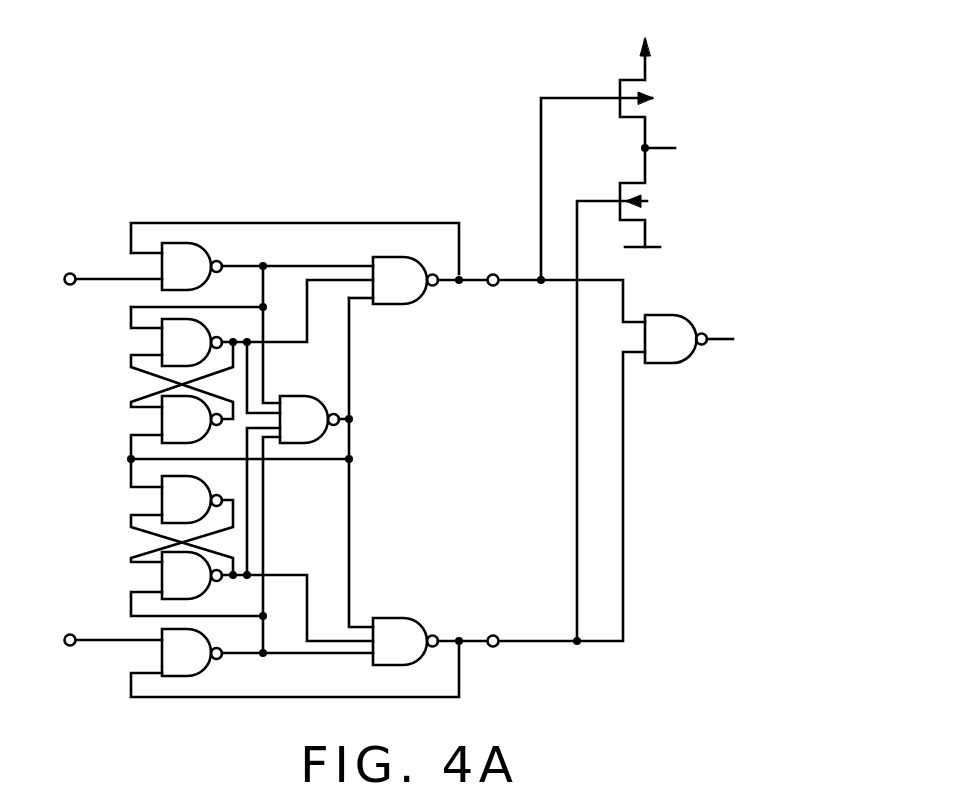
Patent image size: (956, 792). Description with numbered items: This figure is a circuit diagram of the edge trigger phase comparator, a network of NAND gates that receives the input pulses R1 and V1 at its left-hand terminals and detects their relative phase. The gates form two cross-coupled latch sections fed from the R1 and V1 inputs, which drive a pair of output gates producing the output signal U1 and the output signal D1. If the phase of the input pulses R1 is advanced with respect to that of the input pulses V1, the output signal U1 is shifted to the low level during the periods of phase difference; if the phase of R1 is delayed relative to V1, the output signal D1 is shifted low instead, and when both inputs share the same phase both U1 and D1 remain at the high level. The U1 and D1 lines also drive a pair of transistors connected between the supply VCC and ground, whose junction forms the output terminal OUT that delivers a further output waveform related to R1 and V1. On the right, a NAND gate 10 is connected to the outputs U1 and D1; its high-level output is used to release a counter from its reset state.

The NAND gate 10 is at (681, 315).
The input pulses R1 is at (98, 280).
The input pulses V1 is at (98, 641).
The output signal U1 is at (509, 289).
The output signal D1 is at (509, 514).
The supply voltage VCC is at (643, 36).
The output terminal OUT is at (684, 151).